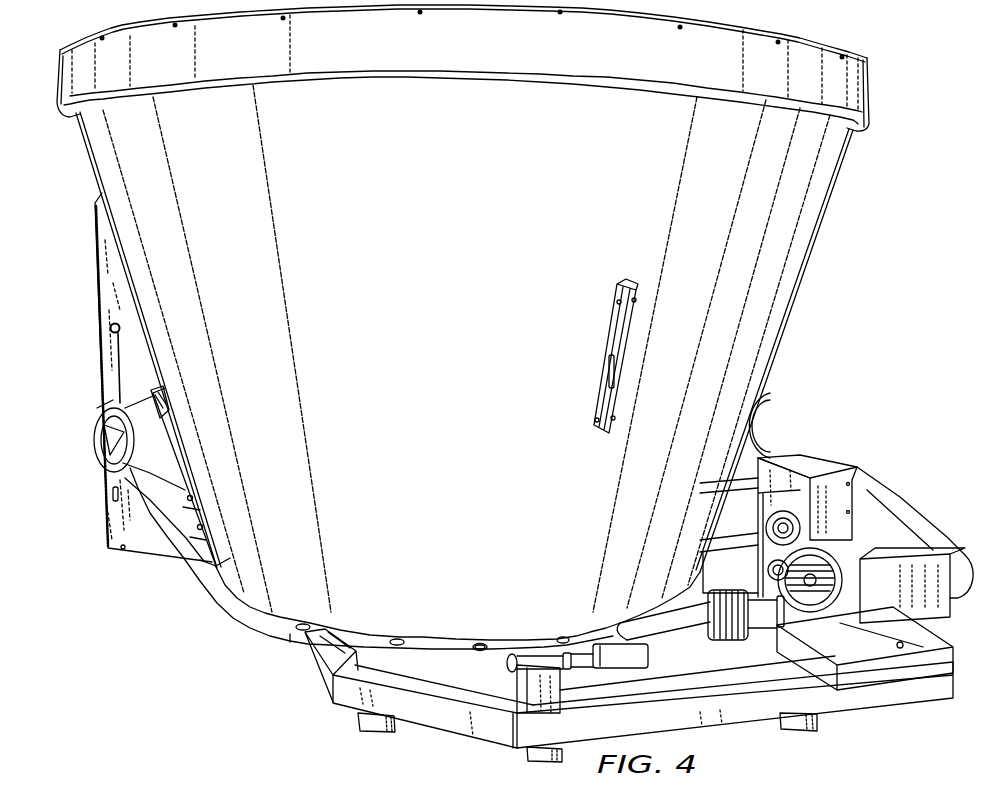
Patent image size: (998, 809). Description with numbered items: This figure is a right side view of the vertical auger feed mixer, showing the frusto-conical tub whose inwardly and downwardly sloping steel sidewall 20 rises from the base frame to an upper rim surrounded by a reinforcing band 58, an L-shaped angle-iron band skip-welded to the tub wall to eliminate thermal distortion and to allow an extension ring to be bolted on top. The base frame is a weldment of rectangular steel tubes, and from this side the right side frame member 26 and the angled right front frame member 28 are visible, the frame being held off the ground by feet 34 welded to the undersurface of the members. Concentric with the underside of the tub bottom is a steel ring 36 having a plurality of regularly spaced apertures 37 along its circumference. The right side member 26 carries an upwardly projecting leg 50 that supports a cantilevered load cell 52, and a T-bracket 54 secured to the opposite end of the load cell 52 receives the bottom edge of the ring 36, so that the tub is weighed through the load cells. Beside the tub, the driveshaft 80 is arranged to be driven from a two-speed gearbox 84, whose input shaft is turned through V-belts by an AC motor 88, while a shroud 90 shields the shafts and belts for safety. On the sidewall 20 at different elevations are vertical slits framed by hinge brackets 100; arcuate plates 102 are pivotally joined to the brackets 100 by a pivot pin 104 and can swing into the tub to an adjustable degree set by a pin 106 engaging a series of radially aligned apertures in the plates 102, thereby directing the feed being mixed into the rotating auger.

The sidewall 20 is at (465, 201).
The right side frame member 26 is at (933, 690).
The angled right front frame member 28 is at (380, 700).
The feet 34 is at (380, 733).
The steel ring 36 is at (356, 678).
The apertures 37 is at (483, 650).
The upwardly projecting leg 50 is at (530, 700).
The load cell 52 is at (585, 660).
The T-bracket 54 is at (647, 663).
The reinforcing band 58 is at (870, 85).
The driveshaft 80 is at (690, 632).
The two-speed gearbox 84 is at (813, 467).
The AC motor 88 is at (893, 547).
The shroud 90 is at (893, 493).
The hinge brackets 100 is at (176, 438).
The arcuate plates 102 is at (102, 437).
The pivot pin 104 is at (190, 498).
The pin 106 is at (160, 411).